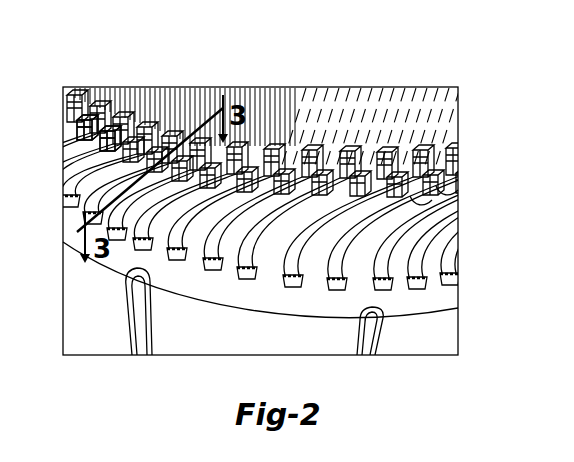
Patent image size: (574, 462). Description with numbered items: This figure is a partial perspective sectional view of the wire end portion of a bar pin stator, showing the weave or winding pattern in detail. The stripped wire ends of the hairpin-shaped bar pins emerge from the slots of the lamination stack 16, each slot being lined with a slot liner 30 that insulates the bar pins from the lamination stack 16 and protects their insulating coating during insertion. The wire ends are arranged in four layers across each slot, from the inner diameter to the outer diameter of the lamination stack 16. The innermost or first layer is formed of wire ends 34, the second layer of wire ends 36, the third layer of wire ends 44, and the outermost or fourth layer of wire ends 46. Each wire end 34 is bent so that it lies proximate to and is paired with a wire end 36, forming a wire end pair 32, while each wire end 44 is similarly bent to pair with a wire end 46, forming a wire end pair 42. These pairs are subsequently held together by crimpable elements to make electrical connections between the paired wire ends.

The lamination stack 16 is at (437, 303).
The slot liner 30 is at (255, 270).
The wire end pair 32 is at (280, 157).
The wire ends 34 is at (107, 118).
The wire ends 36 is at (100, 122).
The wire end pair 42 is at (250, 167).
The wire ends 44 is at (87, 120).
The wire ends 46 is at (83, 127).